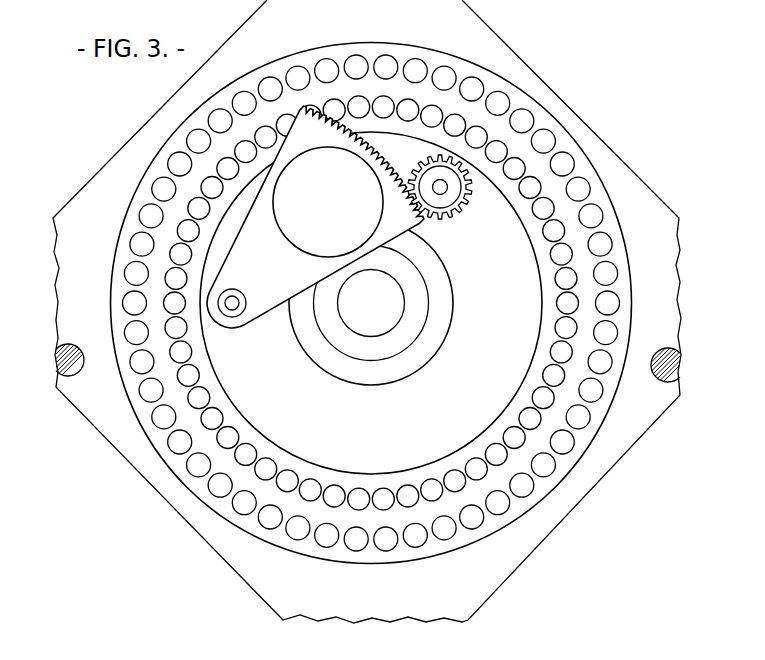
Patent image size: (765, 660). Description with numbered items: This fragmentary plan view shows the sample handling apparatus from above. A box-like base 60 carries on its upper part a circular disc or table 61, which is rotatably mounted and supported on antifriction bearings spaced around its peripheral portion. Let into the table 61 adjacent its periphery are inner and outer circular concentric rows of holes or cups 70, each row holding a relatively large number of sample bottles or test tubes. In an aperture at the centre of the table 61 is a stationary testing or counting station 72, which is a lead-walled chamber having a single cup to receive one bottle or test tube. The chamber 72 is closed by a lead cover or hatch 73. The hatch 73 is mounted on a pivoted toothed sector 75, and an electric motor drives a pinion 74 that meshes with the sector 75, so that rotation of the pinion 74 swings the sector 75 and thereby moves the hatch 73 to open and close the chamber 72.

The box-like base 60 is at (489, 38).
The circular disc or table 61 is at (625, 295).
The holes or cups 70 is at (583, 425).
The testing or counting station 72 is at (418, 356).
The lead cover or hatch 73 is at (332, 219).
The pinion 74 is at (457, 206).
The pivoted toothed sector 75 is at (262, 272).